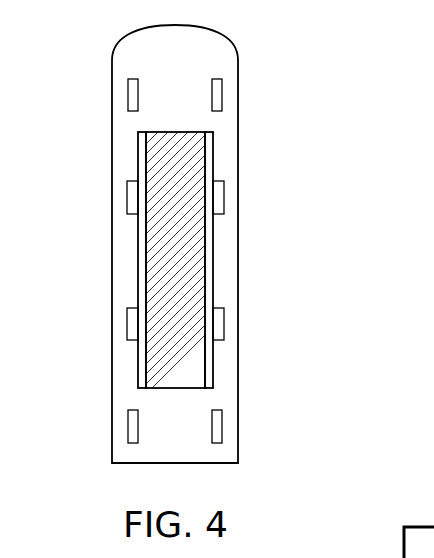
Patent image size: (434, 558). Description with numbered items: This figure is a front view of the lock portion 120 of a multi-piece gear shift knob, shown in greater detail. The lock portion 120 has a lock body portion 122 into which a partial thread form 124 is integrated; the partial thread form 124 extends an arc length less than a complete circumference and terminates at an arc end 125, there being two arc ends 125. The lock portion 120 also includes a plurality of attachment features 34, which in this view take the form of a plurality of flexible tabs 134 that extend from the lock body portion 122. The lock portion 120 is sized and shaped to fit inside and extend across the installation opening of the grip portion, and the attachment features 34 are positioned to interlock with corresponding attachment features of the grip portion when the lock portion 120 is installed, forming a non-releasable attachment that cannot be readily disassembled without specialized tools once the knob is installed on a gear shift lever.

The lock portion 120 is at (210, 244).
The lock body portion 122 is at (238, 262).
The partial thread form 124 is at (172, 388).
The arc end 125 is at (138, 380).
The attachment features 34 is at (122, 185).
The flexible tabs 134 is at (127, 200).